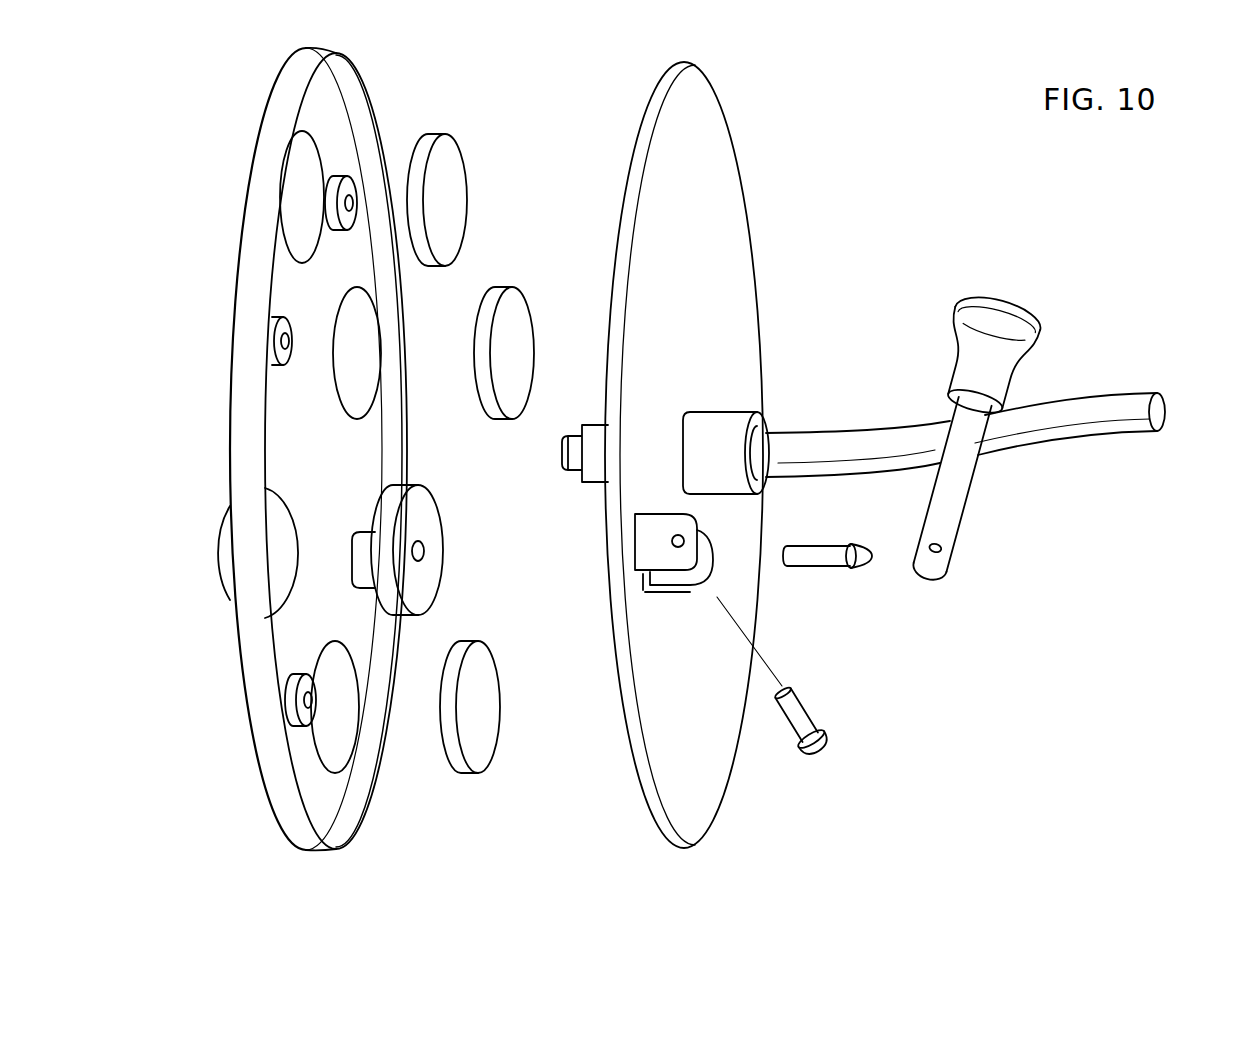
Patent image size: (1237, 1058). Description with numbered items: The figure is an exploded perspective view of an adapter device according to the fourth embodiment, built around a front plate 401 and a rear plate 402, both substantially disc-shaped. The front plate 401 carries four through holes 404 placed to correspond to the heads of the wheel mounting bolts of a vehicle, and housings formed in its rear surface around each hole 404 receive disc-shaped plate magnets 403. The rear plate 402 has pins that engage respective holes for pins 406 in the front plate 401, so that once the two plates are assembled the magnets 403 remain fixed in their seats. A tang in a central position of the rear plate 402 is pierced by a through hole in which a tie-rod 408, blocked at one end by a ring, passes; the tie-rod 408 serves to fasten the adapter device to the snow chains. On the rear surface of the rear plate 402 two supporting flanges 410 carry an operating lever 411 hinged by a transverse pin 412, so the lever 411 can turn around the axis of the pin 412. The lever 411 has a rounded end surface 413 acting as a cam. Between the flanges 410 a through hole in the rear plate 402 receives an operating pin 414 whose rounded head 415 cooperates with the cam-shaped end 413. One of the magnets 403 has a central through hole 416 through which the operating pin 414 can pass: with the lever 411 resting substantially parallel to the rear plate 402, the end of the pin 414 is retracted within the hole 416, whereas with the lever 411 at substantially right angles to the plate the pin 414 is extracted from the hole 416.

The front plate 401 is at (320, 788).
The rear plate 402 is at (720, 180).
The magnets 403 is at (444, 203).
The through holes 404 is at (296, 205).
The holes for pins 406 is at (280, 341).
The tie-rod 408 is at (1130, 400).
The supporting flanges 410 is at (648, 552).
The operating lever 411 is at (965, 473).
The transverse pin 412 is at (797, 712).
The rounded end surface 413 is at (923, 595).
The operating pin 414 is at (817, 553).
The rounded head 415 is at (862, 550).
The through hole 416 is at (422, 548).